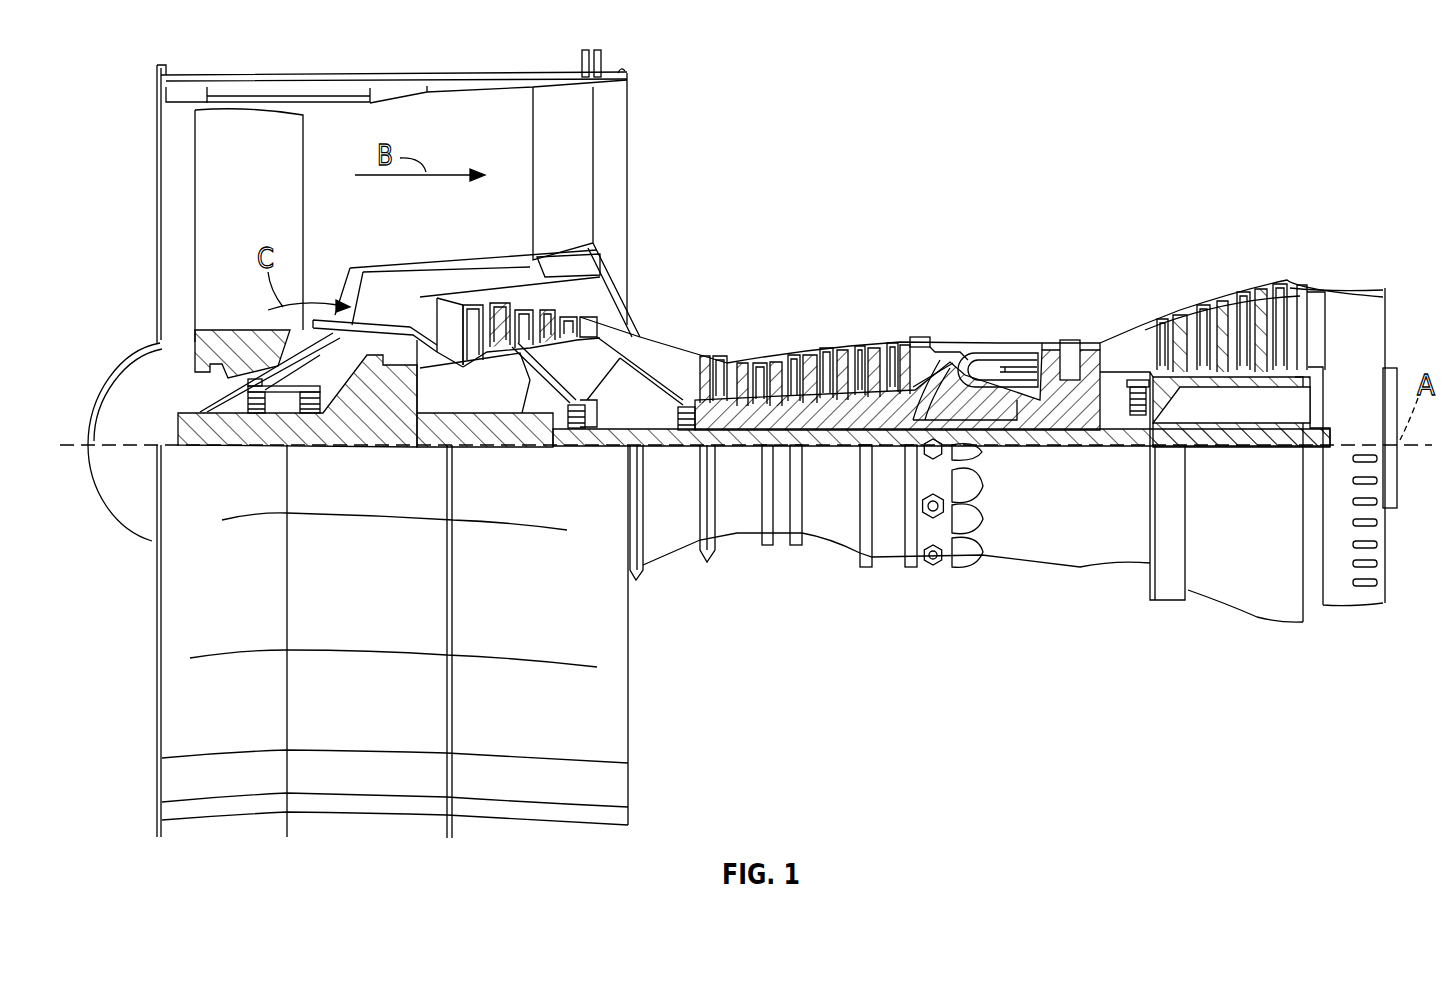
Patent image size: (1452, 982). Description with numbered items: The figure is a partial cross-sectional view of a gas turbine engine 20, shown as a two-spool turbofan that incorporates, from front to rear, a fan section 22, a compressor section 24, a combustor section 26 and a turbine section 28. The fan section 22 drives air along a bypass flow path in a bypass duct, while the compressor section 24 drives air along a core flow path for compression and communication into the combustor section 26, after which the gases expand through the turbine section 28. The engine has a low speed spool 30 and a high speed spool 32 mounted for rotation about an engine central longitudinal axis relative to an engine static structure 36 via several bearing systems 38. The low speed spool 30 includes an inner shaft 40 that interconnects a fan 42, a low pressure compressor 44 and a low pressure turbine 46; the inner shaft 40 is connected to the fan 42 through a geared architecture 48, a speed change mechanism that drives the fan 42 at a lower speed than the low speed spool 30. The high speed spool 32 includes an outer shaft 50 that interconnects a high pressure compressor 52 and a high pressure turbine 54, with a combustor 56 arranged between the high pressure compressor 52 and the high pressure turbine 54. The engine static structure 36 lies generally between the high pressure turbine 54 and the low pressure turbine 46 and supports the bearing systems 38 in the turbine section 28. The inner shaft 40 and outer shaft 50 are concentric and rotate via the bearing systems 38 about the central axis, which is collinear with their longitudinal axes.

The gas turbine engine 20 is at (1203, 116).
The fan section 22 is at (267, 71).
The compressor section 24 is at (819, 303).
The combustor section 26 is at (989, 303).
The turbine section 28 is at (1132, 285).
The low speed spool 30 is at (853, 446).
The high speed spool 32 is at (907, 387).
The engine static structure 36 is at (892, 563).
The bearing systems 38 is at (263, 408).
The inner shaft 40 is at (643, 440).
The fan 42 is at (272, 200).
The low pressure compressor 44 is at (548, 320).
The low pressure turbine 46 is at (1232, 300).
The geared architecture 48 is at (397, 410).
The outer shaft 50 is at (1012, 430).
The high pressure compressor 52 is at (810, 413).
The high pressure turbine 54 is at (1072, 336).
The combustor 56 is at (995, 362).